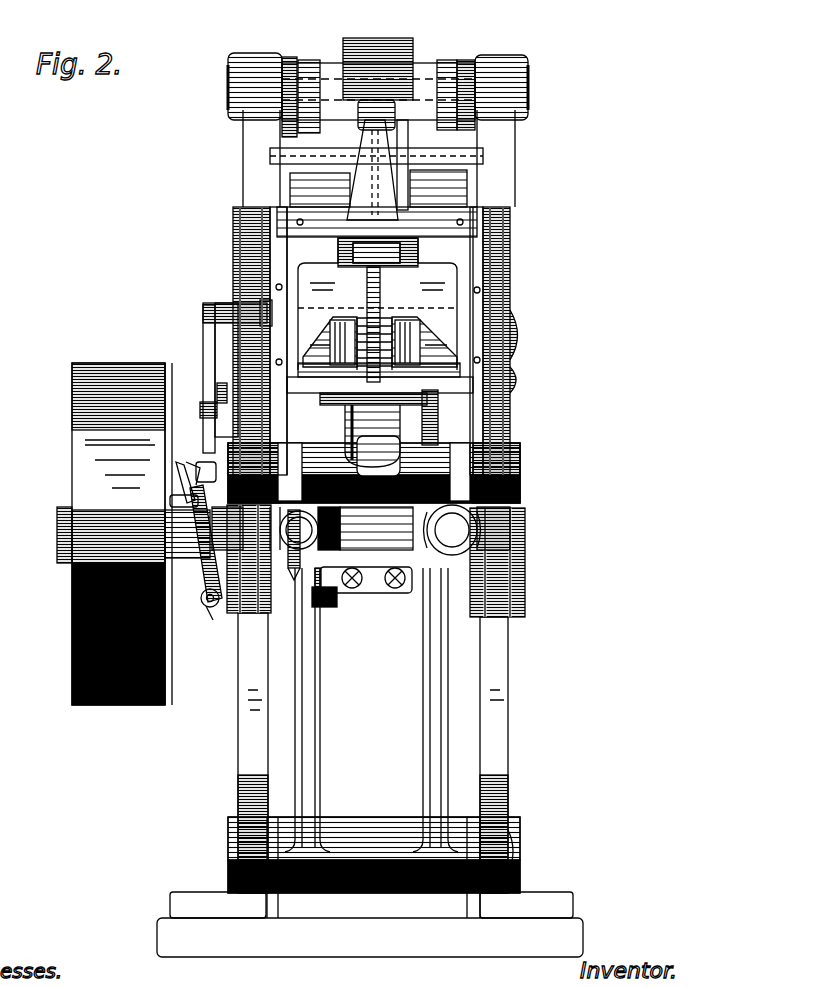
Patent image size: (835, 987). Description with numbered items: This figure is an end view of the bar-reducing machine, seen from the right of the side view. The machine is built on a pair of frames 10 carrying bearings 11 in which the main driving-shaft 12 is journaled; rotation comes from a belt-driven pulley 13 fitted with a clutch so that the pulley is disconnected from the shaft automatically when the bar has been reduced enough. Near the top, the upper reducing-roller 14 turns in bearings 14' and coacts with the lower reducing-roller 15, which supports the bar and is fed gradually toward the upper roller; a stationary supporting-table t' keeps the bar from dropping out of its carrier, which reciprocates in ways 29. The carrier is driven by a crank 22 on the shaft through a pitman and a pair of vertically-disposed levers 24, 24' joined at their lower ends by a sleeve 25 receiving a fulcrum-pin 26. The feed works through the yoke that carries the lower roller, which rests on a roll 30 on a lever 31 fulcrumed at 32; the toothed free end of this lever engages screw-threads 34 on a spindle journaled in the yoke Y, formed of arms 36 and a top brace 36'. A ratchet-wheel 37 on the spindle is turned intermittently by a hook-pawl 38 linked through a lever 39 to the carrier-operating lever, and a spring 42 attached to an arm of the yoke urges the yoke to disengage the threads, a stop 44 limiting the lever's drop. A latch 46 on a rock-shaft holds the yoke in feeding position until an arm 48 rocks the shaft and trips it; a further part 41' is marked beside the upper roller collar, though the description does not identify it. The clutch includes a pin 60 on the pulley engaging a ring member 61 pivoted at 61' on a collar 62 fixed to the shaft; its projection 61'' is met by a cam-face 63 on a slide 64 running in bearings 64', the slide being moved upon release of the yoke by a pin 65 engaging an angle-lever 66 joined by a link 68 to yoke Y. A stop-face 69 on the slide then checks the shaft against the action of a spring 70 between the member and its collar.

The frames 10 is at (240, 719).
The bearings 11 is at (238, 616).
The main driving-shaft 12 is at (448, 542).
The pulley 13 is at (70, 588).
The upper reducing-roller 14 is at (378, 58).
The bearings 14' is at (375, 86).
The lower reducing-roller 15 is at (380, 313).
The crank 22 is at (352, 590).
The vertically-disposed lever 24 is at (319, 710).
The vertically-disposed lever 24' is at (420, 710).
The sleeve 25 is at (358, 826).
The fulcrum-pin 26 is at (512, 840).
The ways 29 is at (480, 155).
The roll 30 is at (400, 317).
The lever 31 is at (416, 322).
The fulcrum 32 is at (522, 330).
The screw-threads 34 is at (362, 322).
The arms 36 is at (383, 341).
The top brace 36' is at (337, 211).
The ratchet-wheel 37 is at (355, 402).
The hook-pawl 38 is at (280, 389).
The lever 39 is at (340, 605).
The roller collar 41' is at (301, 85).
The spring 42 is at (322, 595).
The stop 44 is at (437, 396).
The latch 46 is at (392, 108).
The arm 48 is at (494, 170).
The pin 60 is at (178, 462).
The clutch member 61 is at (195, 543).
The pivot 61' is at (198, 627).
The projection 61'' is at (161, 492).
The collar 62 is at (190, 606).
The cam-face 63 is at (192, 464).
The slide 64 is at (205, 370).
The bearings 64' is at (200, 387).
The pin 65 is at (205, 410).
The angle-lever 66 is at (212, 340).
The link 68 is at (240, 314).
The stop-face 69 is at (374, 469).
The spring 70 is at (160, 515).
The yoke Y is at (462, 283).
The stationary supporting-table t' is at (307, 165).